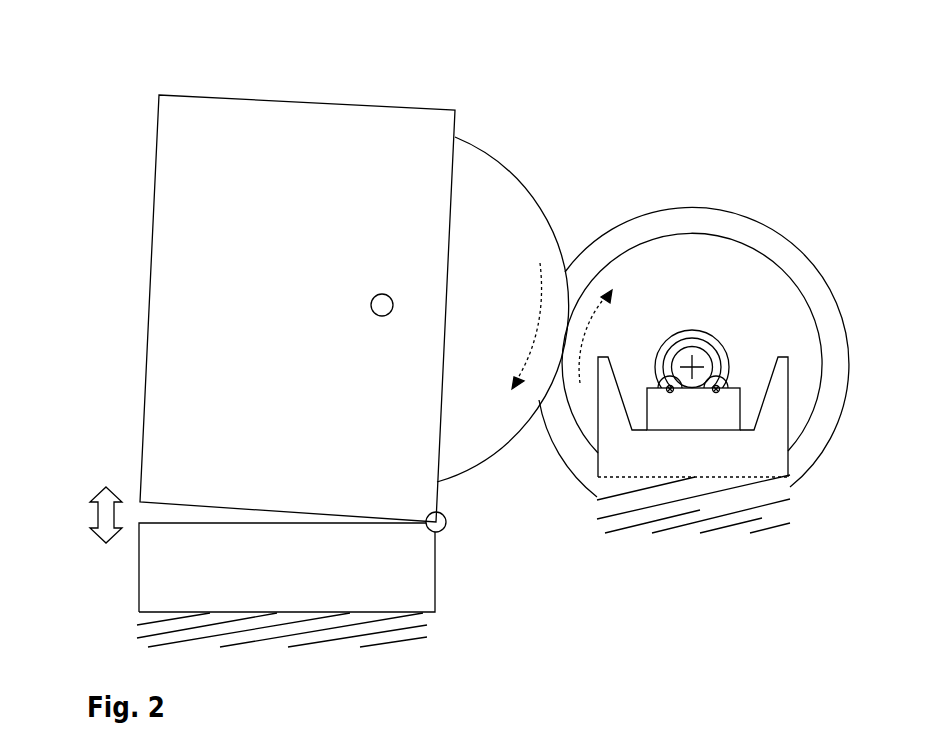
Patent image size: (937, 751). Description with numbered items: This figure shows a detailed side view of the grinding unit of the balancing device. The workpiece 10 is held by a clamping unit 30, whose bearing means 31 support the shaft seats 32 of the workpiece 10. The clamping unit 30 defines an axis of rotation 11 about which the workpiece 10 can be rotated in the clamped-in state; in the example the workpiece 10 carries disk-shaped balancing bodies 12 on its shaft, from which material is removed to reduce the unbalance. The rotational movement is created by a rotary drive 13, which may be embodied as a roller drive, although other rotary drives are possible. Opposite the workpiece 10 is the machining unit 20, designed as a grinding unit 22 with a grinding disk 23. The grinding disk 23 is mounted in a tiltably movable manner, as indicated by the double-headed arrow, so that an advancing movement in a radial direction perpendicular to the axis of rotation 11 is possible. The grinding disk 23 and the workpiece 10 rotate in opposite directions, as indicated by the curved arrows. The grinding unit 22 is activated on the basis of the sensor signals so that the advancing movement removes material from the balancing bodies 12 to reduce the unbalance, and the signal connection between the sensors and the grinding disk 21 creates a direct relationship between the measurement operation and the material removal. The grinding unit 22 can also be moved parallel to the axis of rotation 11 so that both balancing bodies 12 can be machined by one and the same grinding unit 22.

The workpiece 10 is at (818, 463).
The axis of rotation 11 is at (692, 352).
The balancing body 12 is at (757, 285).
The rotary drive 13 is at (693, 408).
The machining unit 20 is at (190, 187).
The grinding disk 21 is at (497, 187).
The grinding unit 22 is at (170, 67).
The grinding disk 23 is at (473, 443).
The clamping unit 30 is at (697, 550).
The bearing means 31 is at (723, 455).
The shaft seat 32 is at (727, 345).